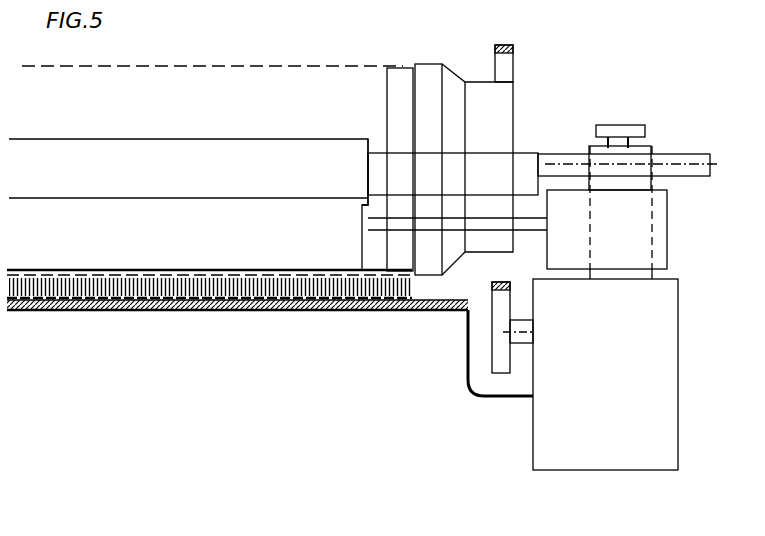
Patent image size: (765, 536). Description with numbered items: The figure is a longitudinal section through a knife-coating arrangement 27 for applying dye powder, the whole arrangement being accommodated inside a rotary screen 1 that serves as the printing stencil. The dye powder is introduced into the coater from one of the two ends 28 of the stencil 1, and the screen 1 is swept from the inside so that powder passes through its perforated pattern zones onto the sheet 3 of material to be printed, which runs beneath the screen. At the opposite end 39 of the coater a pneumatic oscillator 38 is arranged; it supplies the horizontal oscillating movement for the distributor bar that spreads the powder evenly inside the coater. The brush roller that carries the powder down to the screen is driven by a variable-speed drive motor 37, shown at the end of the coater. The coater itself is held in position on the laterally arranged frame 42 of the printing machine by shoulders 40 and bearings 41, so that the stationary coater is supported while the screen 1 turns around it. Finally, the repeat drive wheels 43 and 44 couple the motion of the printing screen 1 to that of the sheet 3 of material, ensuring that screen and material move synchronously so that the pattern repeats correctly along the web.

The rotary screen 1 is at (196, 66).
The sheet of material 3 is at (213, 286).
The knife-coating arrangement 27 is at (150, 147).
The end of the stencil 28 is at (528, 117).
The variable-speed drive motor 37 is at (640, 243).
The pneumatic oscillator 38 is at (460, 184).
The end of the coater 39 is at (368, 148).
The shoulder 40 is at (670, 158).
The bearing 41 is at (609, 146).
The frame of the printing machine 42 is at (557, 407).
The repeat drive wheel 43 is at (502, 337).
The repeat drive wheel 44 is at (513, 64).